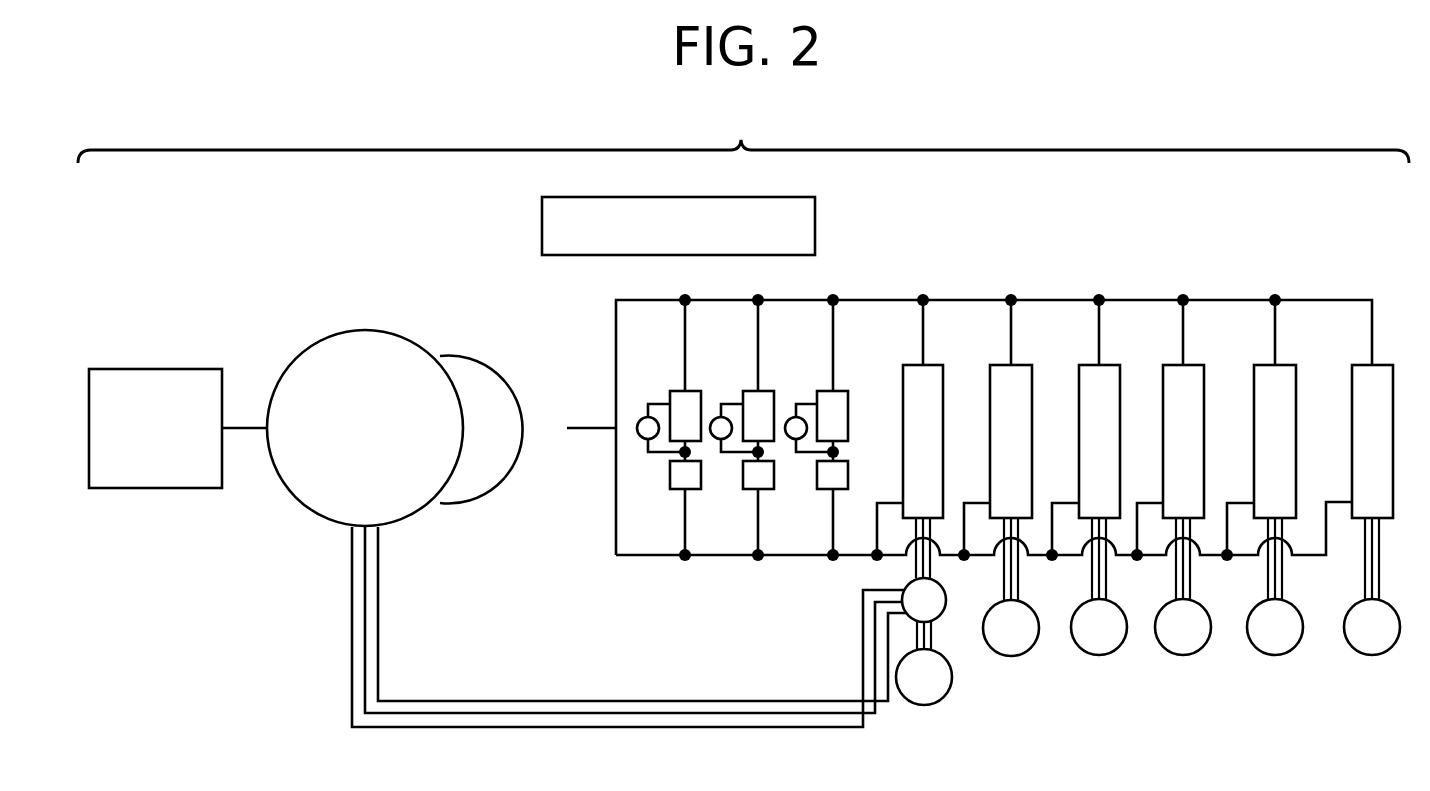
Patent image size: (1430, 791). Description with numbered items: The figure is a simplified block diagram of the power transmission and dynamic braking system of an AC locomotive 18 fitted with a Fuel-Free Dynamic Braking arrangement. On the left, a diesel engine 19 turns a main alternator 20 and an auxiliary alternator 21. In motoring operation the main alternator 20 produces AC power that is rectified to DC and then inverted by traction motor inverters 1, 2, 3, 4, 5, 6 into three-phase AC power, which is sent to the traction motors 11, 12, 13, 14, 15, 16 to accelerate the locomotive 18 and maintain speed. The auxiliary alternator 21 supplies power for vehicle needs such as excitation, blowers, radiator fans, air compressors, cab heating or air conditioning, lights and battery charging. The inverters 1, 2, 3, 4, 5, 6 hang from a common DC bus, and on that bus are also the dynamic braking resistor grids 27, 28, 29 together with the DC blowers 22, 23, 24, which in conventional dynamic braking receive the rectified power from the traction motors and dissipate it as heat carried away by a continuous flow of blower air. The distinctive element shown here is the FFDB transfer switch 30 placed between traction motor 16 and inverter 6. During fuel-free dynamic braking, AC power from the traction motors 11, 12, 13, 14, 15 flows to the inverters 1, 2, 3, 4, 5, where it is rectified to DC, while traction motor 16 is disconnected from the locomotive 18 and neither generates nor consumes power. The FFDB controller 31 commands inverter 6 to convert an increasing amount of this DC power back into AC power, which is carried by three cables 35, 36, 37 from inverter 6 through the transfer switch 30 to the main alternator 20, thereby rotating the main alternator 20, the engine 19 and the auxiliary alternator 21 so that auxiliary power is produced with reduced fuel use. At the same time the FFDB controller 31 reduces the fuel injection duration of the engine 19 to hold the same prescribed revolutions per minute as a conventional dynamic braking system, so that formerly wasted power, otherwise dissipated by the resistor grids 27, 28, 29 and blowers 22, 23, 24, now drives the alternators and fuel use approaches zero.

The traction motor inverter 1 is at (1394, 377).
The traction motor inverter 2 is at (1297, 377).
The traction motor inverter 3 is at (1205, 377).
The traction motor inverter 4 is at (1121, 377).
The traction motor inverter 5 is at (1033, 377).
The traction motor inverter 6 is at (945, 377).
The traction motor 11 is at (1372, 655).
The traction motor 12 is at (1275, 655).
The traction motor 13 is at (1183, 655).
The traction motor 14 is at (1099, 655).
The traction motor 15 is at (1011, 656).
The traction motor 16 is at (924, 705).
The AC locomotive 18 is at (743, 132).
The diesel engine 19 is at (158, 369).
The main alternator 20 is at (363, 330).
The auxiliary alternator 21 is at (468, 330).
The DC blower 22 is at (642, 417).
The DC blower 23 is at (715, 417).
The DC blower 24 is at (791, 417).
The dynamic braking resistor grid 27 is at (675, 490).
The dynamic braking resistor grid 28 is at (748, 490).
The dynamic braking resistor grid 29 is at (822, 490).
The FFDB transfer switch 30 is at (946, 600).
The FFDB controller 31 is at (815, 224).
The cable 35 is at (352, 680).
The cable 36 is at (365, 634).
The cable 37 is at (418, 701).